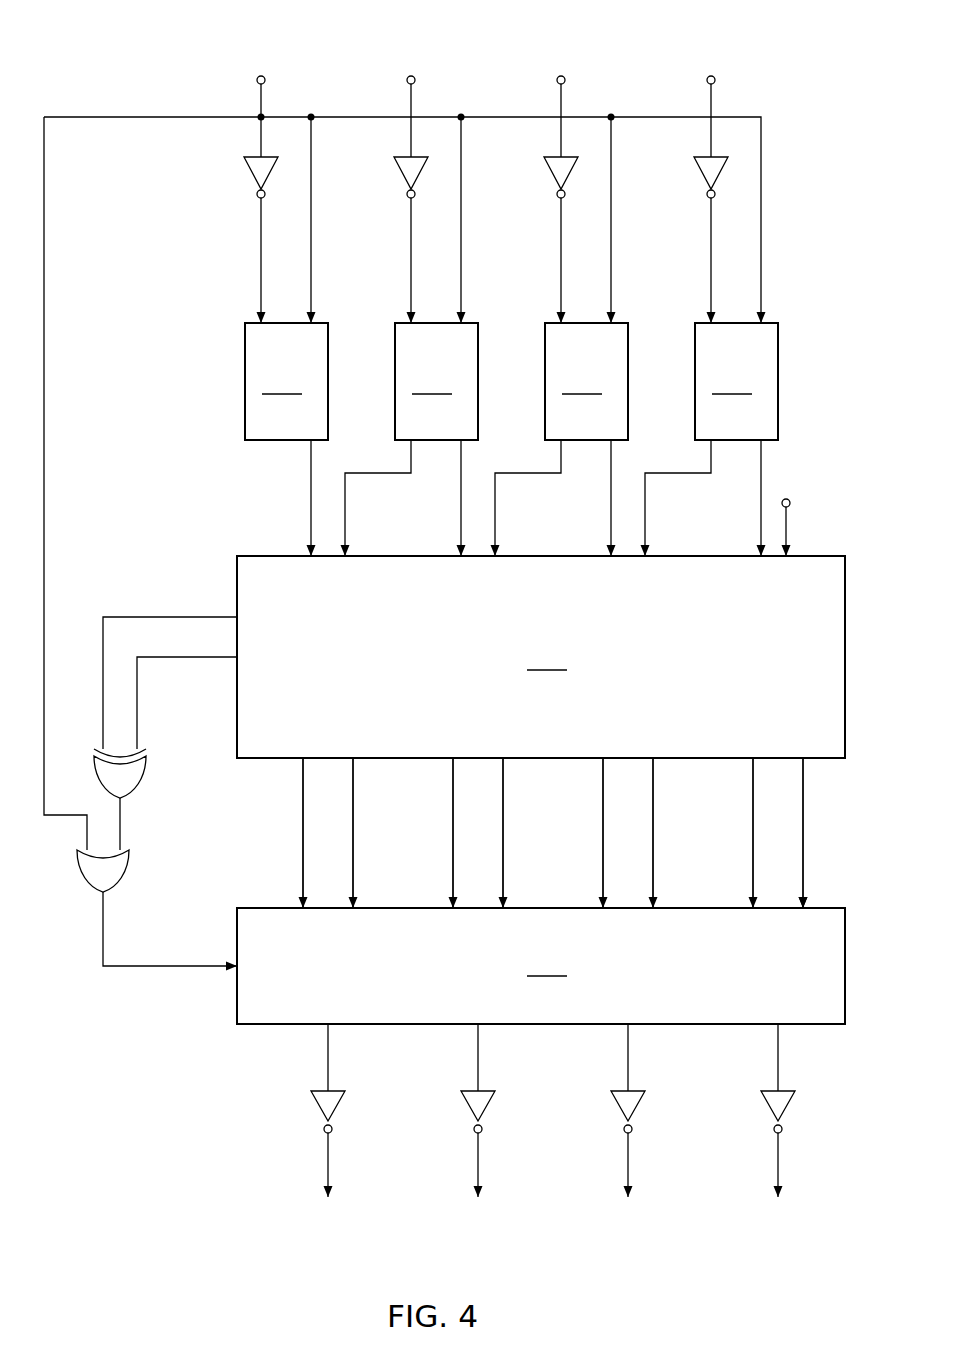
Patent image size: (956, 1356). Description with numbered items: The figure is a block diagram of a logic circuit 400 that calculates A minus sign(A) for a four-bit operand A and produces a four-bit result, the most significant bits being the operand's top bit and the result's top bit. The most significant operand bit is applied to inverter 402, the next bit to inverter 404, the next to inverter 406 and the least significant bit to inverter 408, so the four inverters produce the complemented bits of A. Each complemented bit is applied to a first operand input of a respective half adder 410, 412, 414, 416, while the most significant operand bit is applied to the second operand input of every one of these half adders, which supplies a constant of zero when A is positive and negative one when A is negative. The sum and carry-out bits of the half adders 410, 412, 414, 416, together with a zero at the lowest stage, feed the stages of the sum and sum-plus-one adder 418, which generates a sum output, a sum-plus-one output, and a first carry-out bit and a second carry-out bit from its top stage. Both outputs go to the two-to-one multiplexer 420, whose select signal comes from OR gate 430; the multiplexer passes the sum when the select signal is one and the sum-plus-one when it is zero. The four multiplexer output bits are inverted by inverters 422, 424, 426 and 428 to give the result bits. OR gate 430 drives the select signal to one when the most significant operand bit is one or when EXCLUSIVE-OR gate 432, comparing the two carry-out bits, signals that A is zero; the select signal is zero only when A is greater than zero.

The logic circuit 400 is at (77, 50).
The inverter 402 is at (250, 170).
The inverter 404 is at (400, 170).
The inverter 406 is at (550, 170).
The inverter 408 is at (700, 170).
The half adder 410 is at (286, 382).
The half adder 412 is at (436, 382).
The half adder 414 is at (586, 382).
The half adder 416 is at (736, 382).
The sum and sum-plus-one adder 418 is at (541, 657).
The 2:1 multiplexer 420 is at (541, 967).
The inverter 422 is at (340, 1108).
The inverter 424 is at (490, 1108).
The inverter 426 is at (640, 1108).
The inverter 428 is at (790, 1108).
The OR gate 430 is at (127, 877).
The EXCLUSIVE-OR gate 432 is at (145, 781).